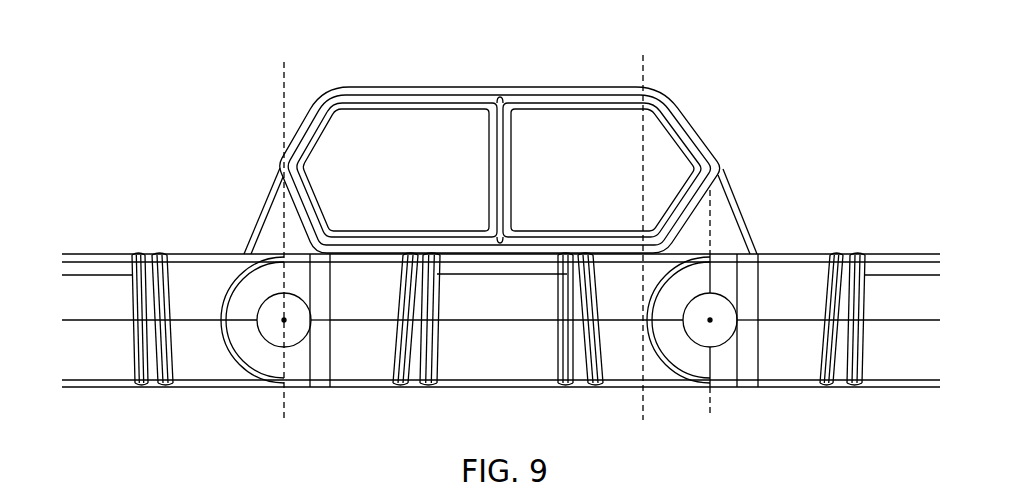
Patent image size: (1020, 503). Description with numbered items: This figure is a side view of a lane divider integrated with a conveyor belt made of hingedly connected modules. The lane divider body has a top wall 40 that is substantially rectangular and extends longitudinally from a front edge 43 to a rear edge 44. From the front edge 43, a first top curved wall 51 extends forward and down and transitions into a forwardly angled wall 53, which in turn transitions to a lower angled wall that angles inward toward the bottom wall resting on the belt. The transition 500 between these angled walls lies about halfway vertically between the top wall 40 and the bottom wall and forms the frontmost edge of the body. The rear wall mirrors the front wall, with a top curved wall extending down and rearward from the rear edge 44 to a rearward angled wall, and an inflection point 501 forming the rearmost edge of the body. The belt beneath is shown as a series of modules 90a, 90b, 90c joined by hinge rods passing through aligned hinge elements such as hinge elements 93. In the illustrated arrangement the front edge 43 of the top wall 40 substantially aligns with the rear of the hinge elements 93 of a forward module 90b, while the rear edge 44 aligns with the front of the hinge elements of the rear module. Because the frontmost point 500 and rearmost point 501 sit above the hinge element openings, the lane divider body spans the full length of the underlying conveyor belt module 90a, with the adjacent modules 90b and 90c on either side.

The top wall 40 is at (470, 87).
The rear edge 44 is at (356, 86).
The front edge 43 is at (640, 94).
The first top curved wall 51 is at (681, 97).
The forwardly angled wall 53 is at (707, 142).
The transition 500 is at (722, 170).
The inflection point 501 is at (277, 162).
The underlying conveyor belt module 90a is at (372, 353).
The conveyor belt module 90b is at (792, 285).
The chassis front section 90c is at (198, 290).
The hinge elements 93 is at (692, 352).